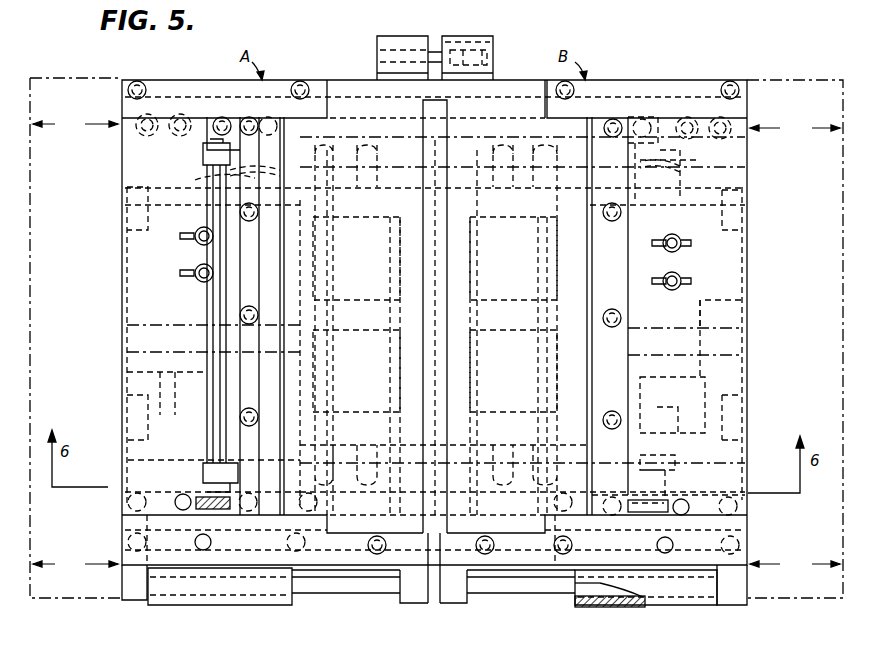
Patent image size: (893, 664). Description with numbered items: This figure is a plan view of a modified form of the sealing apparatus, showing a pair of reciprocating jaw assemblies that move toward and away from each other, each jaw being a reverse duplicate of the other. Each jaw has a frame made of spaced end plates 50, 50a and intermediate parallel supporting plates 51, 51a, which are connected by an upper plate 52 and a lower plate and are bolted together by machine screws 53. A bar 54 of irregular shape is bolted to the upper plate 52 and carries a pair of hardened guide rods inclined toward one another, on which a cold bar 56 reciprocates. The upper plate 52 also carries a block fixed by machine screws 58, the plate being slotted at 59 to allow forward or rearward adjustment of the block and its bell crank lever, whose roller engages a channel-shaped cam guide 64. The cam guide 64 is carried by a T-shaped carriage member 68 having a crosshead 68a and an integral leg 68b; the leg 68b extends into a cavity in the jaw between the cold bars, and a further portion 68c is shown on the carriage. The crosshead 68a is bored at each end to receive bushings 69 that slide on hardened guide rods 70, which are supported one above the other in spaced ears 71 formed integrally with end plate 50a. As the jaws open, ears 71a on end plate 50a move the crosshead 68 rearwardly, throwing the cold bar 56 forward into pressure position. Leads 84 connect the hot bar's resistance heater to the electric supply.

The end plate 50 is at (597, 92).
The end plate 50a is at (535, 568).
The intermediate supporting plate 51 is at (436, 316).
The intermediate supporting plate 51a is at (700, 502).
The upper plate 52 is at (689, 457).
The machine screw 53 is at (728, 86).
The bar 54 is at (619, 150).
The cold bar 56 is at (406, 259).
The machine screw 58 is at (672, 282).
The slot 59 is at (682, 246).
The cam guide 64 is at (735, 328).
The carriage member 68 is at (220, 606).
The crosshead 68a is at (658, 606).
The leg 68b is at (740, 365).
The slide bar slot 68c is at (740, 388).
The bushing 69 is at (600, 608).
The hardened guide rod 70 is at (358, 596).
The ear 71 is at (133, 598).
The ear 71a is at (412, 602).
The lead 84 is at (216, 170).